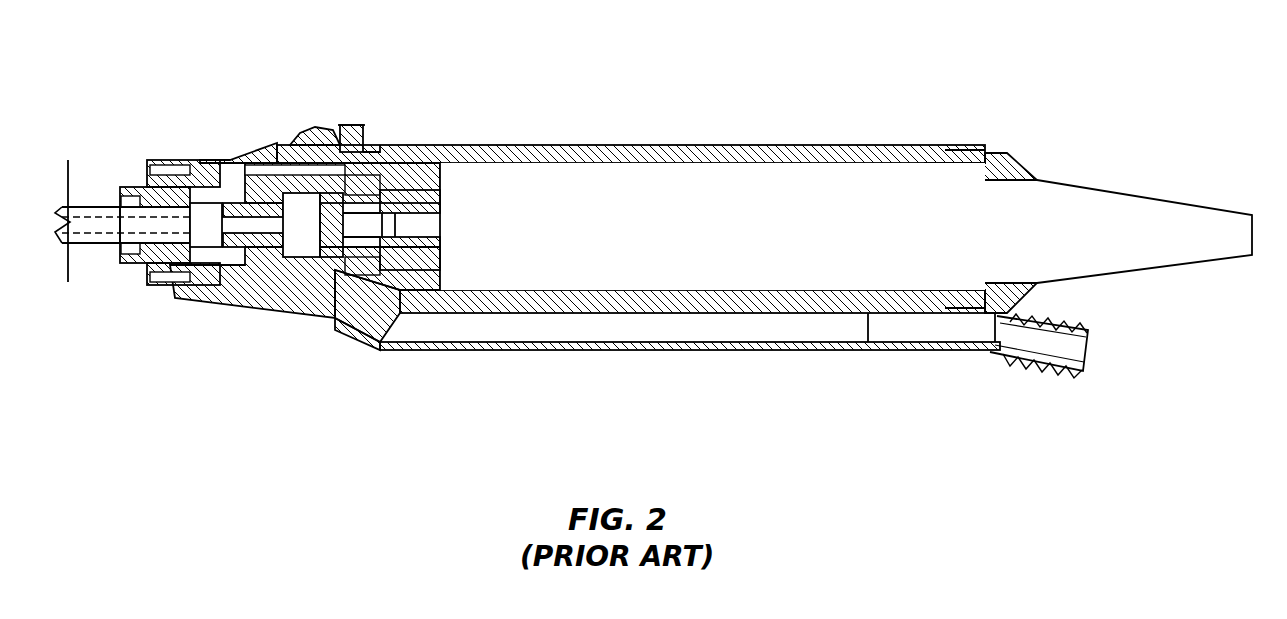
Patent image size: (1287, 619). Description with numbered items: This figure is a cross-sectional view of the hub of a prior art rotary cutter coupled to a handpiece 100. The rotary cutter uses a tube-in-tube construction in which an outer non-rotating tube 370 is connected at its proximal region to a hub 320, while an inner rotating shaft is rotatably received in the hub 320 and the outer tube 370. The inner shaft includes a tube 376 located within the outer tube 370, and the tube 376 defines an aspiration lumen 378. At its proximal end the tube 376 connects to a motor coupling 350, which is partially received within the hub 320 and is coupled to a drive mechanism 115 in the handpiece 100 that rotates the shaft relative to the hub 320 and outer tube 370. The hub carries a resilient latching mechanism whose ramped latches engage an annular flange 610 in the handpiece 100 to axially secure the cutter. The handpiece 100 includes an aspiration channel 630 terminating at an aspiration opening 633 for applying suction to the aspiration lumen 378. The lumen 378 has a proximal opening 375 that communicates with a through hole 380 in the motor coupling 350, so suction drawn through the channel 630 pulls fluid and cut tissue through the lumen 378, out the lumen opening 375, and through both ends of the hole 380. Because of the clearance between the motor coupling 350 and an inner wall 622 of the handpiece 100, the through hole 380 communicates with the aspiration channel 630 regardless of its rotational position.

The handpiece 100 is at (642, 118).
The drive mechanism 115 is at (413, 314).
The hub 320 is at (150, 270).
The motor coupling 350 is at (383, 343).
The outer tube 370 is at (92, 243).
The proximal opening 375 is at (313, 290).
The tube 376 is at (92, 212).
The aspiration lumen 378 is at (135, 224).
The through hole 380 is at (297, 185).
The annular flange 610 is at (214, 300).
The inner wall 622 is at (320, 172).
The aspiration channel 630 is at (543, 336).
The aspiration opening 633 is at (337, 338).